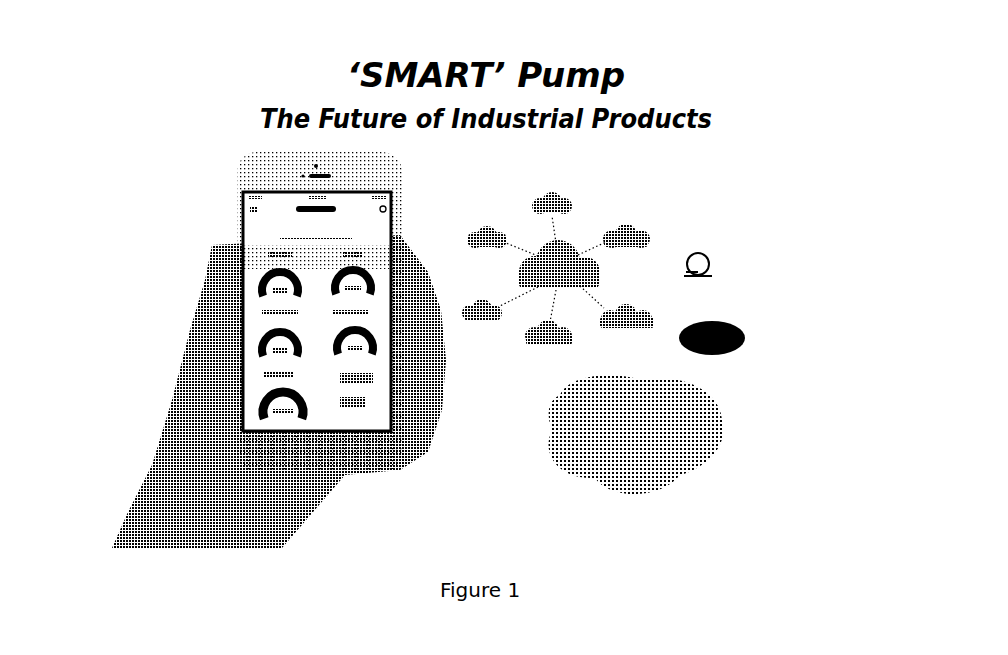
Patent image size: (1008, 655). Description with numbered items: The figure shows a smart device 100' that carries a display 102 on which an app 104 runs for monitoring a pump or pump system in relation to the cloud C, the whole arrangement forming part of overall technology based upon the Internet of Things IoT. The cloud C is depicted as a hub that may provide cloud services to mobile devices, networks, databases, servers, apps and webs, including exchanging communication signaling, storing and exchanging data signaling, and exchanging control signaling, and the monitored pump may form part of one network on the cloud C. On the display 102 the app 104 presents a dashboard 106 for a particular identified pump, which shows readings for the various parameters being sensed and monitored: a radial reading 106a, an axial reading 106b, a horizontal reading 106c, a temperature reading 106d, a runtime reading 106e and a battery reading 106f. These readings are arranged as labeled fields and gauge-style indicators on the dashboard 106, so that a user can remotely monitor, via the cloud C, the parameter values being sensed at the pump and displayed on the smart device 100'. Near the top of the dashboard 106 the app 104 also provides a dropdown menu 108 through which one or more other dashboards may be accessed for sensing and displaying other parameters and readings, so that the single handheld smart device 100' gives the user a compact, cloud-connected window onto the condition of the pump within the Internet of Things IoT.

The smart device 100' is at (203, 316).
The display 102 is at (263, 432).
The app 104 is at (327, 413).
The dashboard 106 is at (290, 209).
The dropdown menu 108 is at (250, 210).
The radial reading 106a is at (258, 252).
The axial reading 106b is at (325, 253).
The horizontal reading 106c is at (250, 312).
The temperature reading 106d is at (327, 312).
The runtime reading 106e is at (253, 378).
The battery reading 106f is at (327, 373).
The cloud C is at (690, 228).
The Internet of Things IoT is at (737, 430).